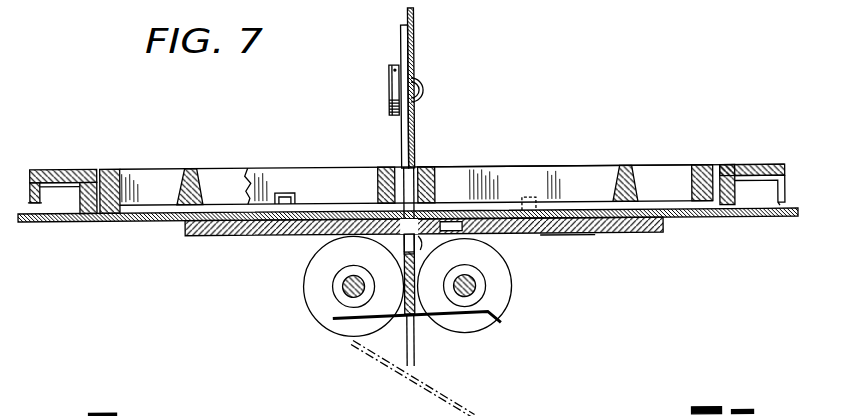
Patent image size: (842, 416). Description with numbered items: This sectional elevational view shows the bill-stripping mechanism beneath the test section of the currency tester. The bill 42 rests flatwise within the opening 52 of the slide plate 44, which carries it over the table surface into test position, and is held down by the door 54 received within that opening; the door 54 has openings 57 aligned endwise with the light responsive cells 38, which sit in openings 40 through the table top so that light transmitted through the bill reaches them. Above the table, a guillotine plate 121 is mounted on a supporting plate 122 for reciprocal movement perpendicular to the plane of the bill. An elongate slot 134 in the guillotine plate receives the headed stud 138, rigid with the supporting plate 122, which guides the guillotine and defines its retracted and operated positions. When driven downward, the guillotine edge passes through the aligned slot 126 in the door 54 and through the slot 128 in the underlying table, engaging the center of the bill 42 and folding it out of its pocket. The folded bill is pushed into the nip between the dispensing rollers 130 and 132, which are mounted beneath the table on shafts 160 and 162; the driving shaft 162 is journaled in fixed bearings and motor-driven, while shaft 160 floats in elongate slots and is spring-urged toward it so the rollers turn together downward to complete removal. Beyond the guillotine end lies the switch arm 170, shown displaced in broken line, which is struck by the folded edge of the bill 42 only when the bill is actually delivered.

The opening 52 is at (97, 167).
The openings 57 is at (208, 186).
The door 54 is at (590, 167).
The slide plate 44 is at (769, 137).
The supporting plate 122 is at (416, 44).
The guillotine plate 121 is at (403, 138).
The headed stud 138 is at (390, 73).
The elongate slot 134 is at (399, 112).
The slot 126 is at (416, 168).
The light responsive cells 38 is at (362, 220).
The openings 40 is at (450, 221).
The slot 128 is at (420, 246).
The dispensing roller 132 is at (312, 291).
The driving shaft 162 is at (345, 283).
The dispensing roller 130 is at (509, 292).
The shaft 160 is at (476, 283).
The switch arm 170 is at (500, 312).
The bill 42 is at (416, 350).